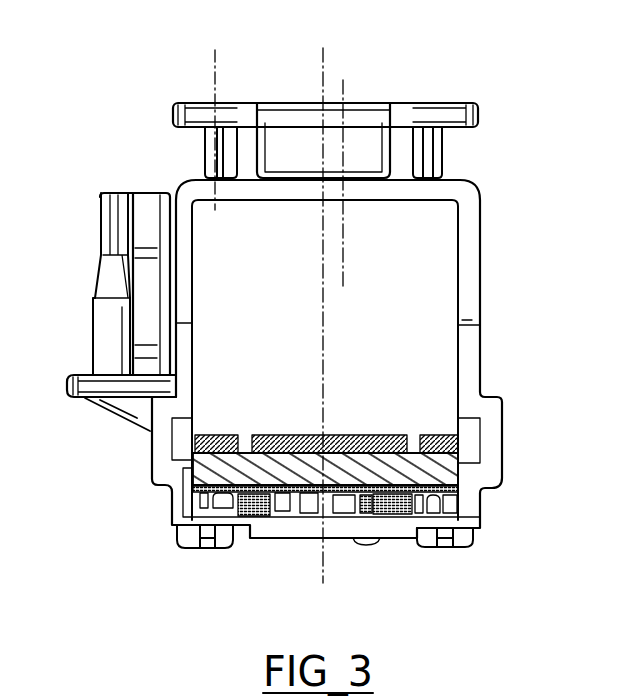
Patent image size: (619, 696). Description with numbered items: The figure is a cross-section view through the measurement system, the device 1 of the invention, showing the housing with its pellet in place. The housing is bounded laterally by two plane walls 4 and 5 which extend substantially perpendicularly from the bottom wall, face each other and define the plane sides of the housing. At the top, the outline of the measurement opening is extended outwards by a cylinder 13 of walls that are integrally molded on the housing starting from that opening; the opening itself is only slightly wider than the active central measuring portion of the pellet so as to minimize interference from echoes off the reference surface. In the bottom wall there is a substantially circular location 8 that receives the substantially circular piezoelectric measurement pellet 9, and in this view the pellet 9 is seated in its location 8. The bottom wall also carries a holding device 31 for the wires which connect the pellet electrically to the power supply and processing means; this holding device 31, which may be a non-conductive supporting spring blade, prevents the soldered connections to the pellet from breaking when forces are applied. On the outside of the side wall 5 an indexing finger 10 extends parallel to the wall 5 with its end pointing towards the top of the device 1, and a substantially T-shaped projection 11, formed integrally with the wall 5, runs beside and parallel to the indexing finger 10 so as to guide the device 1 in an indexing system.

The device 1 is at (498, 174).
The plane wall 4 is at (469, 288).
The plane wall 5 is at (180, 222).
The location 8 is at (340, 513).
The piezoelectric measurement pellet 9 is at (283, 465).
The indexing finger 10 is at (107, 330).
The projection 11 is at (148, 232).
The cylinder 13 is at (283, 132).
The holding device 31 is at (289, 518).